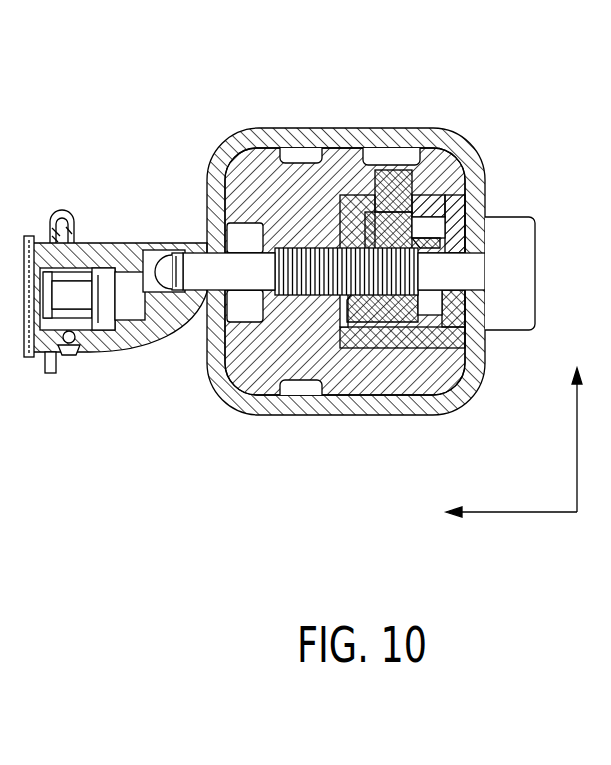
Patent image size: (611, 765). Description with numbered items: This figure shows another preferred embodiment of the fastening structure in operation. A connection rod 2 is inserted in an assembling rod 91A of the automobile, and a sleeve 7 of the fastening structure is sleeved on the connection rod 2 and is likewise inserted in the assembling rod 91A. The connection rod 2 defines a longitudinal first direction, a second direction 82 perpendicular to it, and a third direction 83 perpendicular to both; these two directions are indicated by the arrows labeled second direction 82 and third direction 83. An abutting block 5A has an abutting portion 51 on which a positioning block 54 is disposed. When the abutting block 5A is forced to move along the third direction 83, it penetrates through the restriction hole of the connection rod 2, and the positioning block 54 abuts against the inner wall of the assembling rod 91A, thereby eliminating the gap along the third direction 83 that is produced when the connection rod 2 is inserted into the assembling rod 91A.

The sleeve 7 is at (243, 176).
The assembling rod 91A is at (275, 140).
The positioning block 54 is at (406, 178).
The abutting portion 51 is at (410, 217).
The abutting block 5A is at (440, 237).
The connection rod 2 is at (462, 332).
The third direction 83 is at (577, 454).
The second direction 82 is at (503, 513).